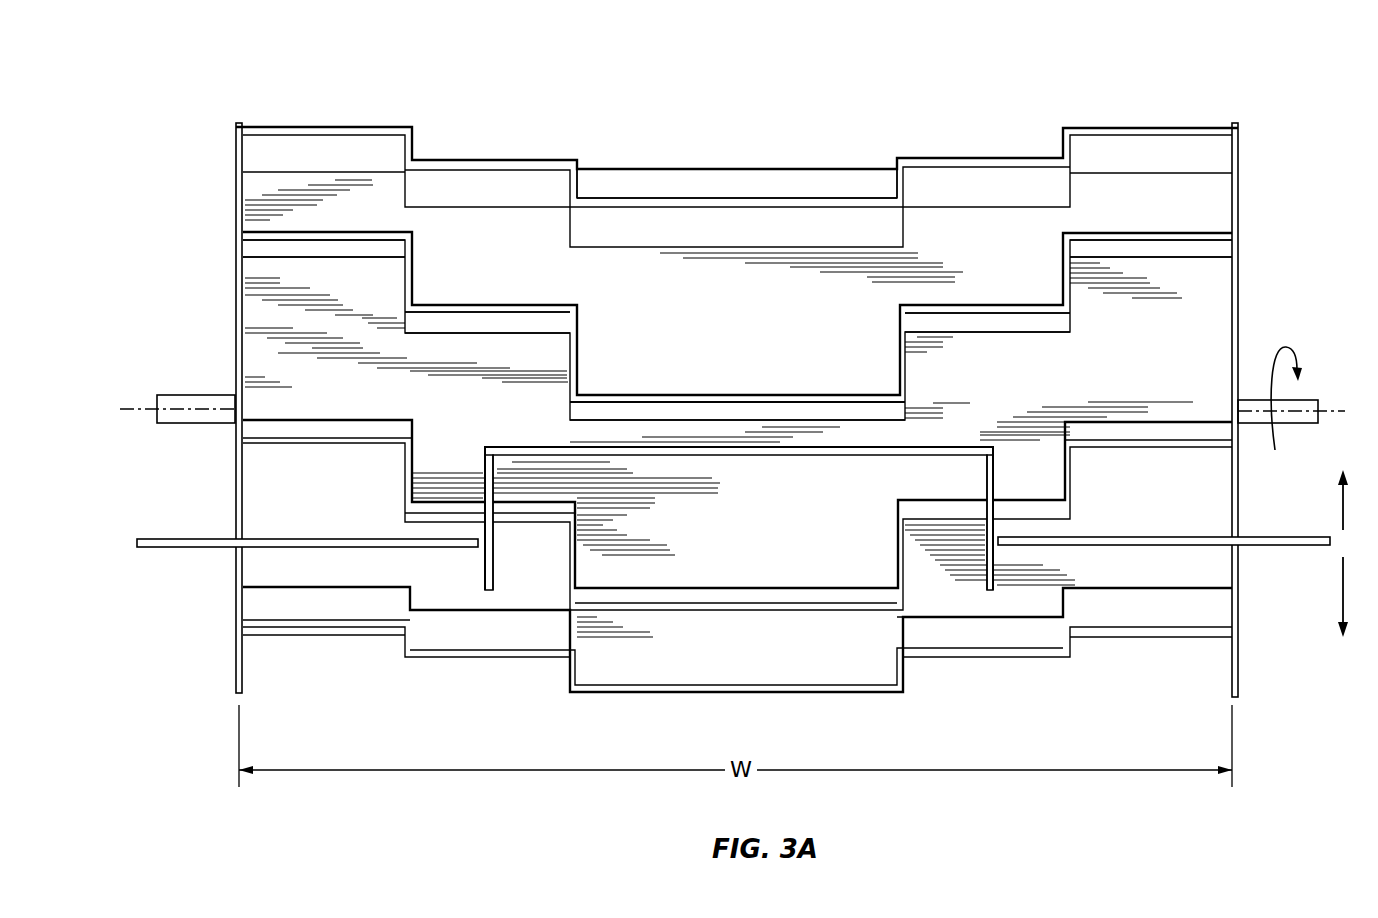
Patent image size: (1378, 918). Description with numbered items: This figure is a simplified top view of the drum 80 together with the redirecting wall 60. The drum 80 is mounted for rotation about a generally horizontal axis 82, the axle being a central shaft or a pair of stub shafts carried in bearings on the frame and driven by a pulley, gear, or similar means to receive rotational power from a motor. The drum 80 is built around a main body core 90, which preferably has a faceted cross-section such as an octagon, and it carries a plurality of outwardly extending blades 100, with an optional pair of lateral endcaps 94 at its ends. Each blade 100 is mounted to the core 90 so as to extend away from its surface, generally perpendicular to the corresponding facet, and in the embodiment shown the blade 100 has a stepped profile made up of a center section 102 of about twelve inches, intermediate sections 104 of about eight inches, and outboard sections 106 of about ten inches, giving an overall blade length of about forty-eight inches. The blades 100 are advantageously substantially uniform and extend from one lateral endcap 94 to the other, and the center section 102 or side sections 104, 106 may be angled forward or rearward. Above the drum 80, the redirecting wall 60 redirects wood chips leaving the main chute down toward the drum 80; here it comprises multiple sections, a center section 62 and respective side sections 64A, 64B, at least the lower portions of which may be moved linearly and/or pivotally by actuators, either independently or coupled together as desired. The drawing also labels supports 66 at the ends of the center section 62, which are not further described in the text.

The drum 80 is at (604, 58).
The horizontal axis 82 is at (125, 408).
The main body core 90 is at (515, 286).
The lateral endcap 94 is at (237, 177).
The blade 100 is at (787, 406).
The center section 102 is at (703, 393).
The intermediate section 104 is at (525, 305).
The outboard section 106 is at (317, 230).
The redirecting wall 60 is at (1262, 545).
The center section 62 is at (805, 453).
The side section 64A is at (305, 547).
The side section 64B is at (1177, 545).
The support legs 66 is at (495, 500).